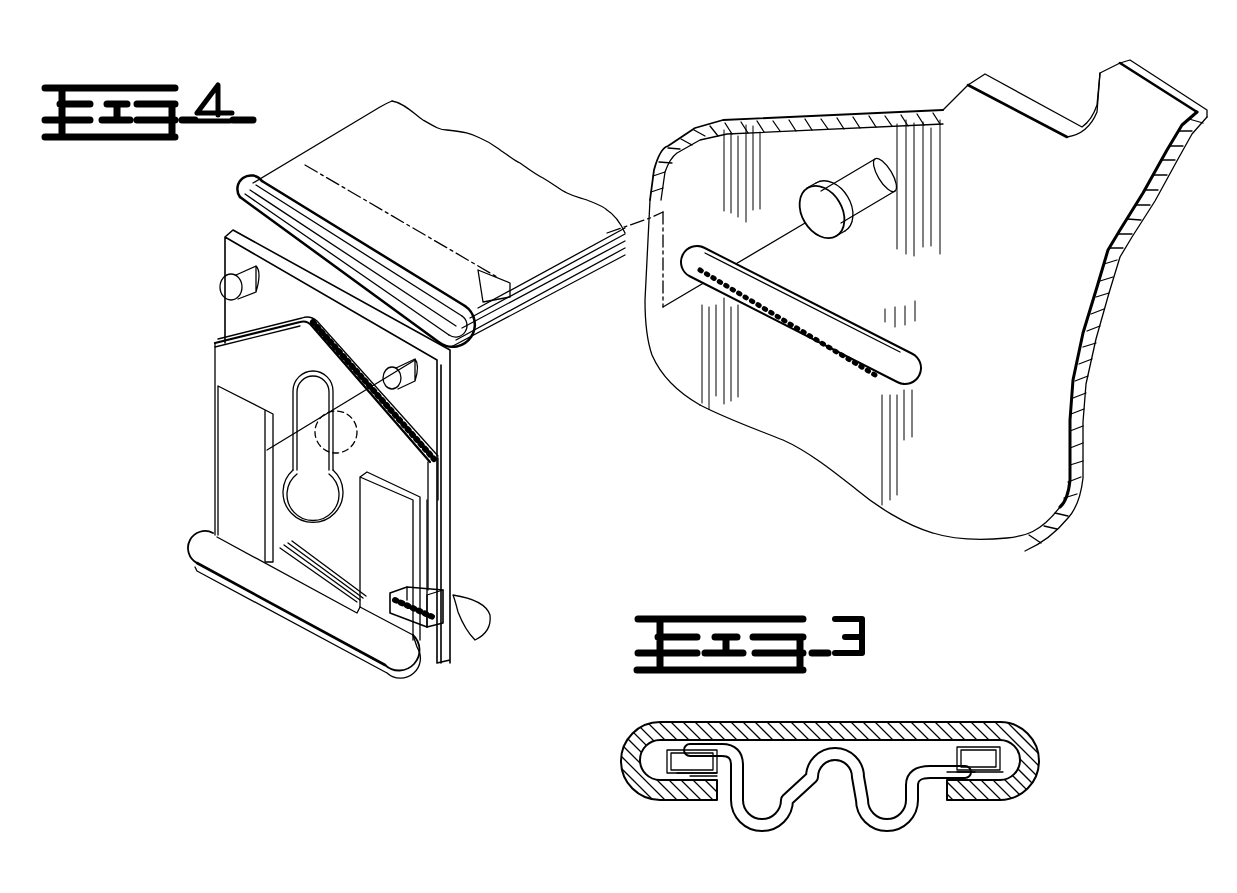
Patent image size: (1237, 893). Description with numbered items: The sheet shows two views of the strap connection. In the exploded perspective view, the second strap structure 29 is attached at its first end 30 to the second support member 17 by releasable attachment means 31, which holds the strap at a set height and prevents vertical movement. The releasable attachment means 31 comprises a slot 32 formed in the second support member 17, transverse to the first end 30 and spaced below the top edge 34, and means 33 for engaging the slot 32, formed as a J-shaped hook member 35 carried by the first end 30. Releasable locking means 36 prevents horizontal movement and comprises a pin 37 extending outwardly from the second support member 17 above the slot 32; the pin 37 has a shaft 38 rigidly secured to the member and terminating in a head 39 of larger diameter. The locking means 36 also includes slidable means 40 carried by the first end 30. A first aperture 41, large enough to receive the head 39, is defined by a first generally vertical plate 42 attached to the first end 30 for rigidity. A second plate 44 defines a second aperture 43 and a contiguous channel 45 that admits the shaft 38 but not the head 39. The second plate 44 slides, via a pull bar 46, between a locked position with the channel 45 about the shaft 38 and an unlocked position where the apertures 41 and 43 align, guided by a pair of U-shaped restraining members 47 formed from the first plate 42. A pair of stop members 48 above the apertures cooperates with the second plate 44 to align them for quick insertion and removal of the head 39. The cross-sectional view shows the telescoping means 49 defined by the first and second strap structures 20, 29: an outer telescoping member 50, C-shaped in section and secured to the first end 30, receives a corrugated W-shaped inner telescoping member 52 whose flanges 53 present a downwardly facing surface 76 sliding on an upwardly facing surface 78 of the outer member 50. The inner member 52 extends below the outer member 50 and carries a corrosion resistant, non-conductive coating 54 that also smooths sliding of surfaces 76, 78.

In FIG. 4, the second support member 17 is at (1057, 283).
In FIG. 3, the first strap structure 20 is at (940, 820).
In FIG. 4, the second strap structure 29 is at (356, 132).
In FIG. 3, the second strap structure 29 is at (902, 718).
In FIG. 4, the first end 30 is at (278, 175).
In FIG. 4, the releasable attachment means 31 is at (752, 385).
In FIG. 4, the slot 32 is at (905, 370).
In FIG. 4, the means for engaging with the slot 33 is at (482, 638).
In FIG. 4, the top edge 34 is at (1153, 92).
In FIG. 4, the J-shaped hook member 35 is at (462, 613).
In FIG. 4, the releasable locking means 36 is at (808, 244).
In FIG. 4, the pin 37 is at (889, 184).
In FIG. 4, the shaft 38 is at (893, 177).
In FIG. 4, the head 39 is at (833, 228).
In FIG. 4, the slidable means 40 is at (212, 345).
In FIG. 4, the first aperture 41 is at (352, 436).
In FIG. 4, the first generally vertical plate 42 is at (425, 398).
In FIG. 4, the second aperture 43 is at (303, 495).
In FIG. 4, the second plate 44 is at (230, 360).
In FIG. 4, the channel 45 is at (302, 372).
In FIG. 4, the pull bar 46 is at (303, 607).
In FIG. 4, the U-shaped restraining members 47 is at (235, 452).
In FIG. 4, the stop members 48 is at (222, 287).
In FIG. 3, the telescoping means 49 is at (630, 798).
In FIG. 3, the telescoping member 50 is at (953, 727).
In FIG. 3, the inner telescoping member 52 is at (813, 763).
In FIG. 3, the flanges 53 is at (680, 757).
In FIG. 3, the coating 54 is at (737, 803).
In FIG. 3, the downwardly facing surface 76 is at (687, 772).
In FIG. 3, the upwardly facing surface 78 is at (690, 775).